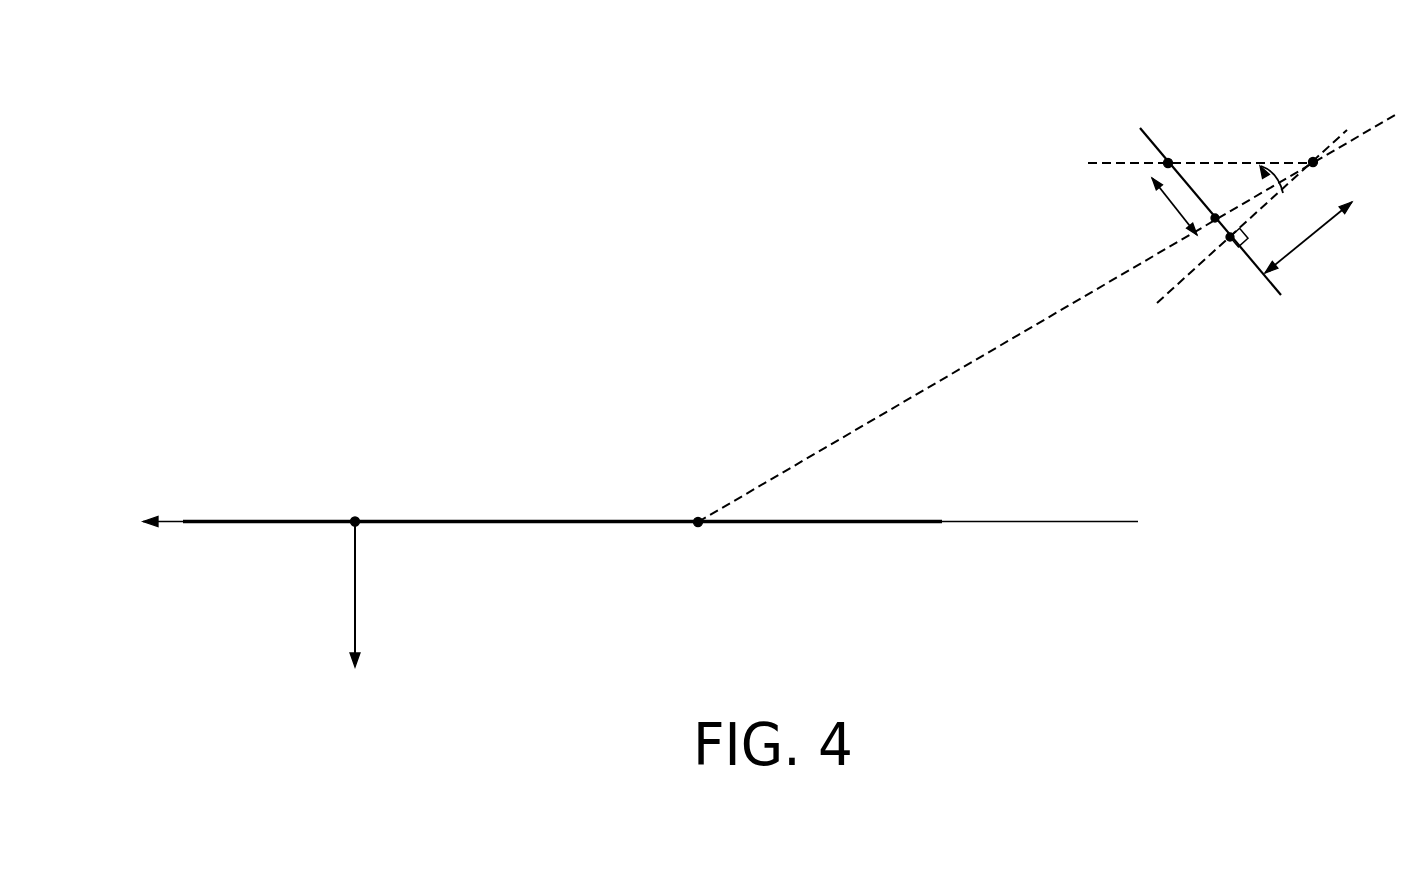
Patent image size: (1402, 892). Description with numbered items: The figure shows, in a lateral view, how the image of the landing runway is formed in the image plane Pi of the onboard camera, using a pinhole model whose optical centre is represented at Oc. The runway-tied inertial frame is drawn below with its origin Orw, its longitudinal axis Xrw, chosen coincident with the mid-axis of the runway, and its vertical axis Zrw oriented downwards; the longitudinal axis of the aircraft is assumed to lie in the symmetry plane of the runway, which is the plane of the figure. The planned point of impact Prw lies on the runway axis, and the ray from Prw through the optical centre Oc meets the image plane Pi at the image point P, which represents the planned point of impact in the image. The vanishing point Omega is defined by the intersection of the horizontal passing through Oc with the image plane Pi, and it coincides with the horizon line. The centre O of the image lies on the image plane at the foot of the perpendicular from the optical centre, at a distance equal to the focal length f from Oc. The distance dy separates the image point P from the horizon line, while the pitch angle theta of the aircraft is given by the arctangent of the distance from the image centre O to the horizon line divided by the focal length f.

The longitudinal axis of the inertial frame Xrw is at (638, 491).
The vertical axis of the inertial frame Zrw is at (312, 595).
The origin of the inertial frame Orw is at (392, 549).
The planned point of impact on the runway Prw is at (1035, 353).
The optical centre of the camera Oc is at (1252, 215).
The vanishing point Omega is at (1200, 149).
The image plane of the camera Pi is at (1218, 227).
The image point of the planned point of impact P is at (1220, 207).
The centre of the image O is at (1237, 259).
The distance of point P from the horizon line dy is at (1167, 206).
The focal length of the camera f is at (1308, 237).
The pitch angle of the aircraft theta is at (1270, 166).